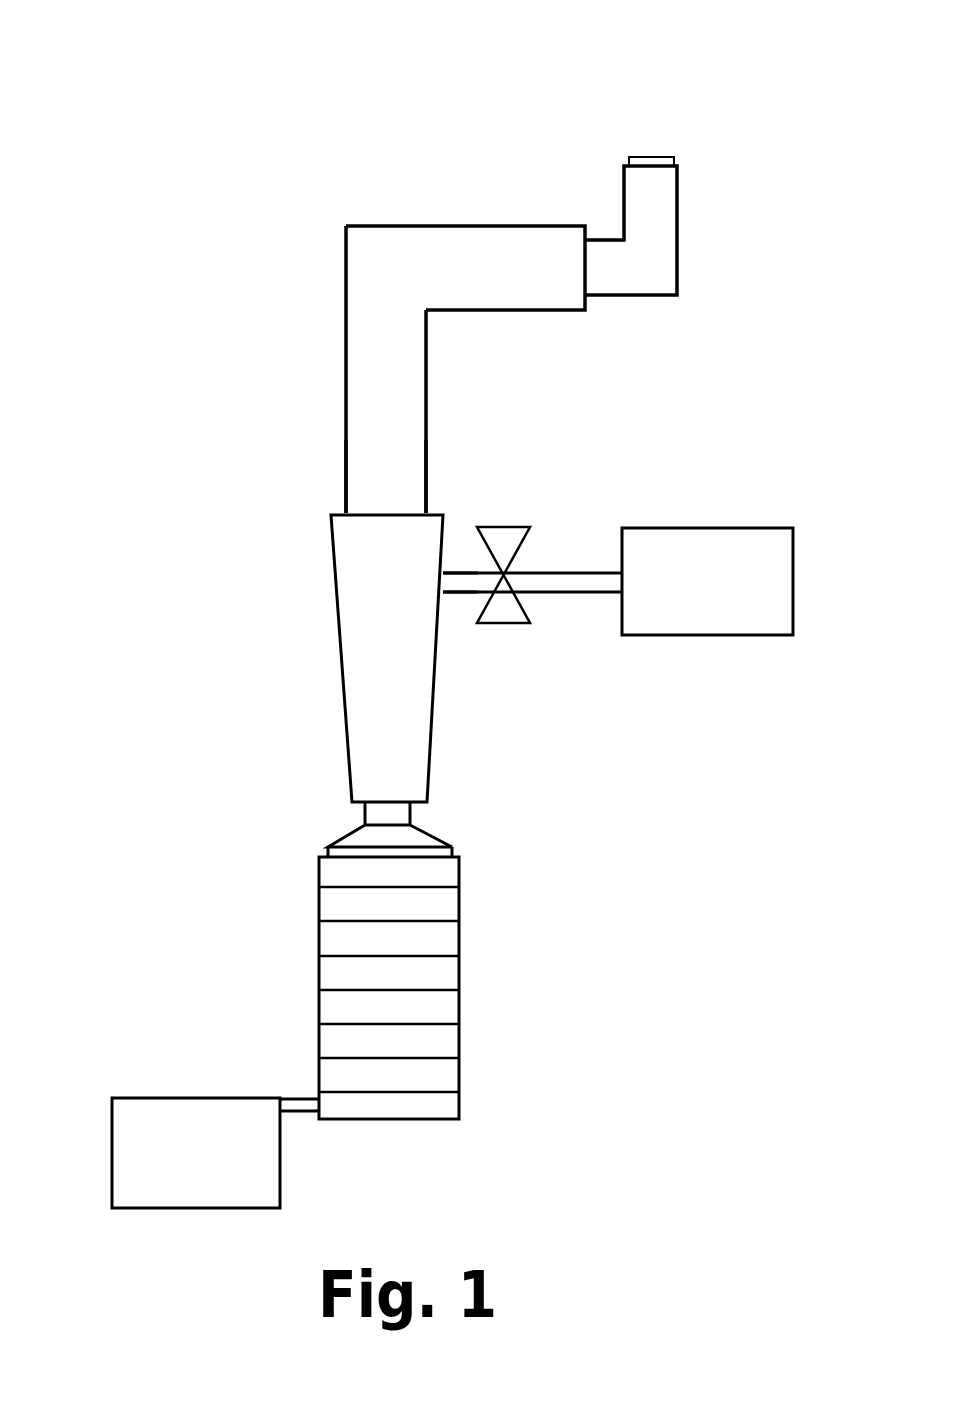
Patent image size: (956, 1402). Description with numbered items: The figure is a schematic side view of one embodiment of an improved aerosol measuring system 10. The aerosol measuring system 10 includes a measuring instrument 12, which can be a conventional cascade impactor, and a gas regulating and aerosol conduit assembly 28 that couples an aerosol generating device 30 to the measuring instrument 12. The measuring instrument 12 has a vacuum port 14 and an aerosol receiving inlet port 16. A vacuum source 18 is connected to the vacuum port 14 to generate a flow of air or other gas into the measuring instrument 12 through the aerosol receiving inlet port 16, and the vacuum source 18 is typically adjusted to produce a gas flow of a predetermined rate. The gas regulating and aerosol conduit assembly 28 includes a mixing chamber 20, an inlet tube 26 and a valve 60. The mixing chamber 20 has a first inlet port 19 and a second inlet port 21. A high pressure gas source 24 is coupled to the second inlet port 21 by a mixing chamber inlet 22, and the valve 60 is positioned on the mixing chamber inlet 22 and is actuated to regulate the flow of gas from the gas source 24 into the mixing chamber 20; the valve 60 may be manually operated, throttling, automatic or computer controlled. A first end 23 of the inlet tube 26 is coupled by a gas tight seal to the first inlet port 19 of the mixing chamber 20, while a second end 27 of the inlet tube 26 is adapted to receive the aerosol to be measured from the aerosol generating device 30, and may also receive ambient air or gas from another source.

The aerosol measuring system 10 is at (258, 88).
The measuring instrument 12 is at (300, 965).
The vacuum port 14 is at (279, 1097).
The aerosol receiving inlet port 16 is at (414, 826).
The vacuum source 18 is at (111, 1165).
The first inlet port 19 is at (347, 511).
The mixing chamber 20 is at (340, 640).
The second inlet port 21 is at (448, 572).
The mixing chamber inlet 22 is at (569, 572).
The first end 23 is at (430, 511).
The gas source 24 is at (737, 636).
The inlet tube 26 is at (346, 340).
The second end 27 is at (582, 257).
The gas regulating and aerosol conduit assembly 28 is at (670, 233).
The aerosol generating device 30 is at (623, 195).
The valve 60 is at (501, 625).